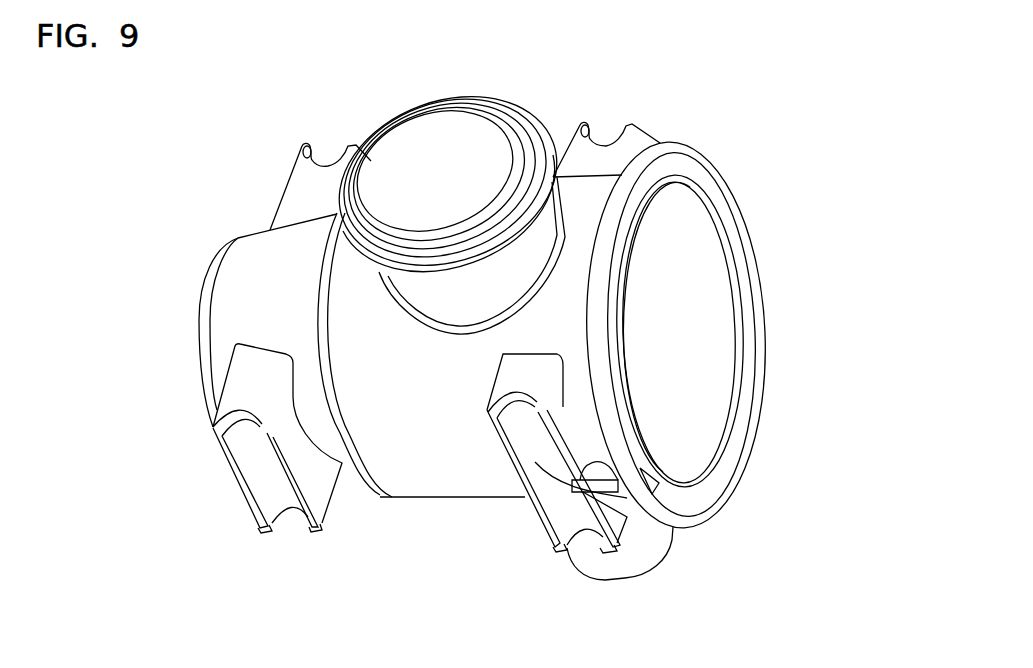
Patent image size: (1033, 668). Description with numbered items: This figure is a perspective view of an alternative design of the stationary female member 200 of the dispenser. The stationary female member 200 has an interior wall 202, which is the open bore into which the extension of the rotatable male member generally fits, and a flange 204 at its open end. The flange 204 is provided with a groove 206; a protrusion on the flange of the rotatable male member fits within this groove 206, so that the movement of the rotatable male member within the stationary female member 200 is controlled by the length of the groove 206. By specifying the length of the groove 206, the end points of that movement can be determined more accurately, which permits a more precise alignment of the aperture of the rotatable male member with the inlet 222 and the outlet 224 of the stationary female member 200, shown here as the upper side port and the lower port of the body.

The stationary female member 200 is at (752, 54).
The interior wall 202 is at (725, 317).
The flange 204 is at (660, 147).
The groove 206 is at (690, 164).
The inlet 222 is at (431, 107).
The outlet 224 is at (655, 552).